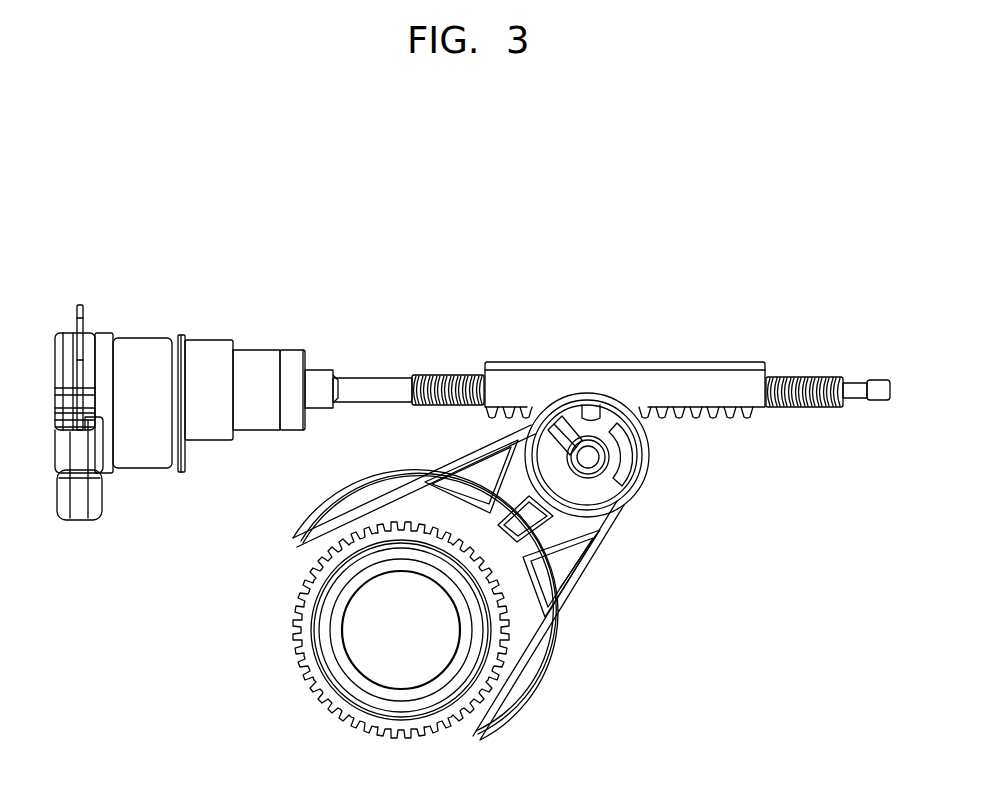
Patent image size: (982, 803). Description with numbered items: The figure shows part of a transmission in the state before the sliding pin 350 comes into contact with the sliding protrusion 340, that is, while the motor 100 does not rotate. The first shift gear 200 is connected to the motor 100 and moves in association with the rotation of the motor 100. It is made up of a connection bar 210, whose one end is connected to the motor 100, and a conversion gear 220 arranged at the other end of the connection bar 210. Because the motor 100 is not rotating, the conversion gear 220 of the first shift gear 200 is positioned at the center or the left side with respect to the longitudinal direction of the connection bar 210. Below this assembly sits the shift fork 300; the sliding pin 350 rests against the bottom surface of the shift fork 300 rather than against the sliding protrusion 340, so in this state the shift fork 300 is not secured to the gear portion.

The motor 100 is at (58, 356).
The first shift gear 200 is at (640, 358).
The connection bar 210 is at (386, 380).
The conversion gear 220 is at (537, 362).
The shift fork 300 is at (578, 603).
The sliding protrusion 340 is at (628, 472).
The sliding pin 350 is at (562, 436).